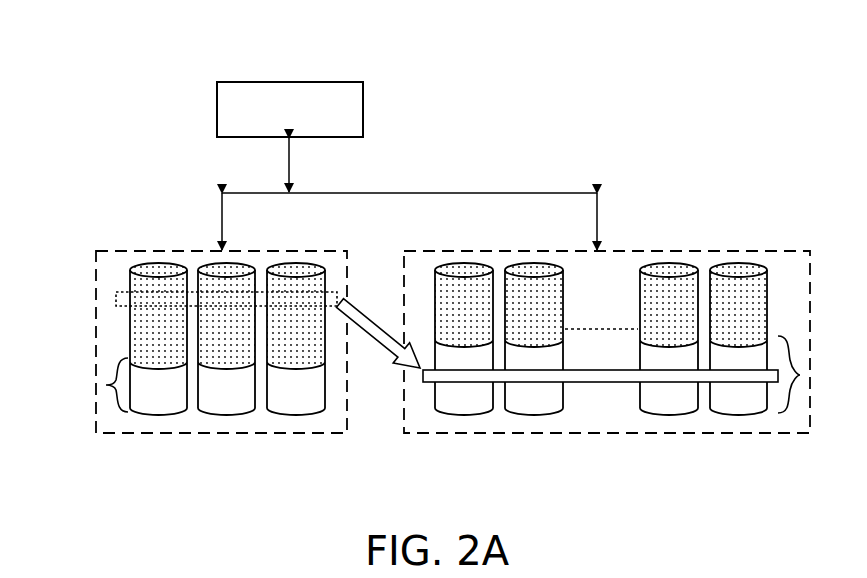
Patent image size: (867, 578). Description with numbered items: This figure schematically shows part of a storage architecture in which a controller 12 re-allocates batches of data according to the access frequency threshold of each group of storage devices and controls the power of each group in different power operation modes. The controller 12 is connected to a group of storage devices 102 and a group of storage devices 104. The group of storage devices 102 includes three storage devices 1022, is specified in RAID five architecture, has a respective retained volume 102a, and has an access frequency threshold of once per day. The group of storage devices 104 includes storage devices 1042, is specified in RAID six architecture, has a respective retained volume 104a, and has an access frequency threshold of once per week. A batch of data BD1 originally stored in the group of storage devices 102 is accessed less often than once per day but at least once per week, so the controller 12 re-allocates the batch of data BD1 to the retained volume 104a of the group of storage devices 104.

The controller 12 is at (343, 82).
The group of storage devices 102 is at (143, 251).
The storage devices 1022 is at (157, 411).
The retained volume 102a is at (103, 388).
The group of storage devices 104 is at (462, 251).
The storage devices 1042 is at (466, 411).
The retained volume 104a is at (801, 378).
The batch of data BD1 is at (116, 300).